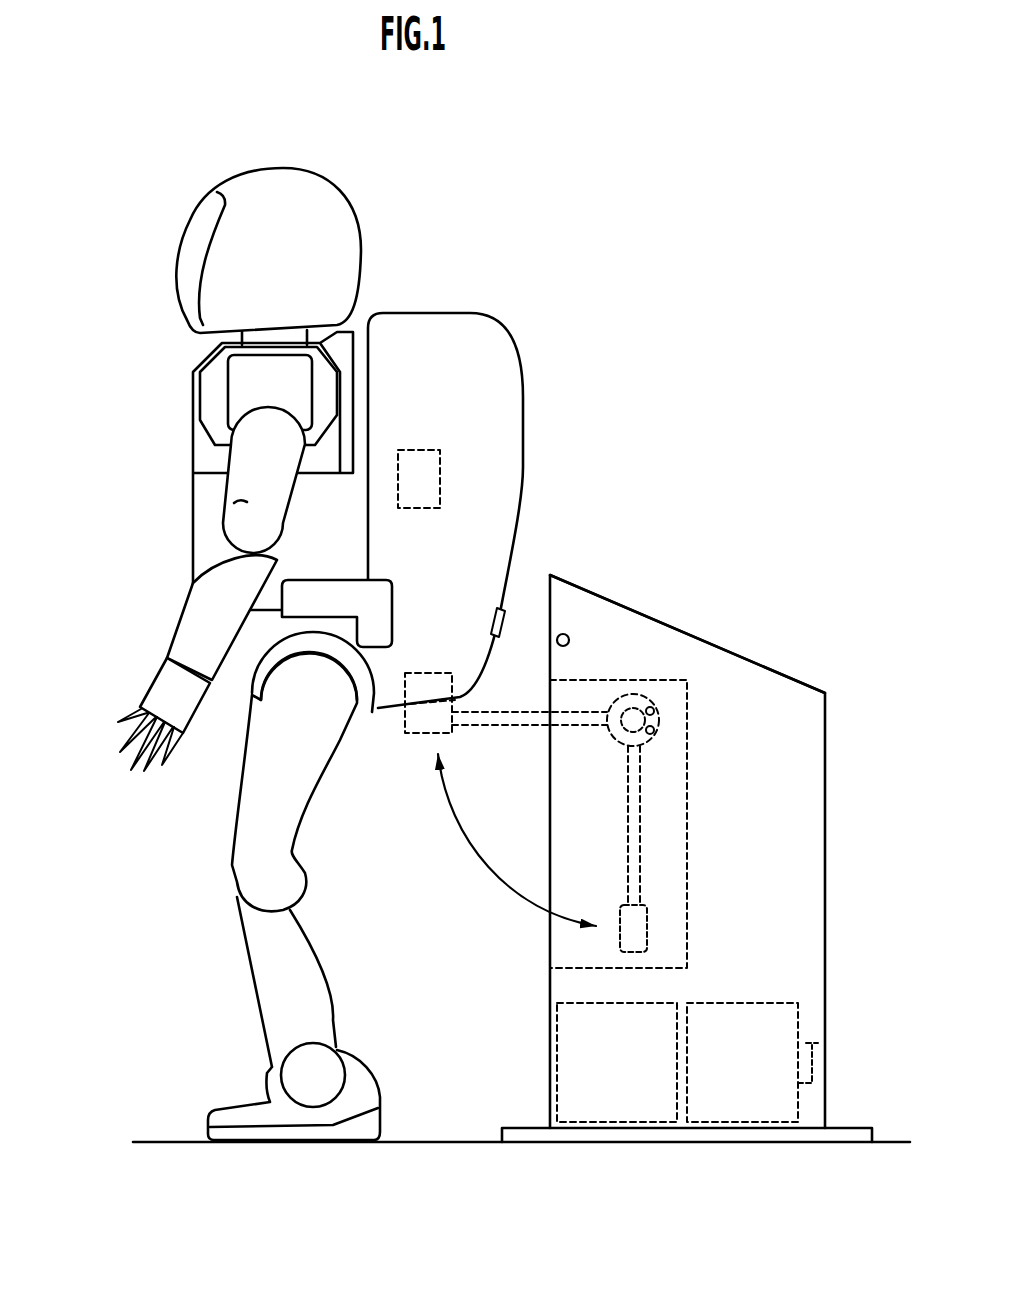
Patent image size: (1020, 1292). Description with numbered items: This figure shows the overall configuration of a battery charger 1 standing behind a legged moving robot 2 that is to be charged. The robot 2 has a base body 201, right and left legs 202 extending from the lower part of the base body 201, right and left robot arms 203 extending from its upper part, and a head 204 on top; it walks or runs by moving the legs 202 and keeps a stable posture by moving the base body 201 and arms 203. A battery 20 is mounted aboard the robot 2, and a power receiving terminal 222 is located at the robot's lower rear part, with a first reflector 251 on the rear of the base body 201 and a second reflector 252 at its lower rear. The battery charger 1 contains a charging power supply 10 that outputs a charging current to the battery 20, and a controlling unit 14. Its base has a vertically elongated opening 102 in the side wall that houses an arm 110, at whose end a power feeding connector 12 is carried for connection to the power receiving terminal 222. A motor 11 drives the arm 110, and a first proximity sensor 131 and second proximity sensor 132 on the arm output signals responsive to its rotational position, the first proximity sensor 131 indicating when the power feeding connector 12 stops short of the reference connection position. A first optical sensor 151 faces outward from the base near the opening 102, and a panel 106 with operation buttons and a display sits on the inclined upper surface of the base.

The battery charger 1 is at (800, 645).
The legged moving robot 2 is at (367, 200).
The charging power supply 10 is at (670, 1003).
The motor 11 is at (640, 700).
The power feeding connector 12 is at (650, 922).
The controlling unit 14 is at (768, 1003).
The battery 20 is at (440, 448).
The opening 102 is at (562, 947).
The panel 106 is at (632, 605).
The arm 110 is at (612, 805).
The first proximity sensor 131 is at (660, 713).
The second proximity sensor 132 is at (662, 733).
The first optical sensor 151 is at (571, 630).
The base body 201 is at (185, 424).
The legs 202 is at (215, 856).
The robot arms 203 is at (170, 605).
The head 204 is at (172, 233).
The power receiving terminal 222 is at (392, 716).
The first reflector 251 is at (512, 607).
The second reflector 252 is at (477, 701).